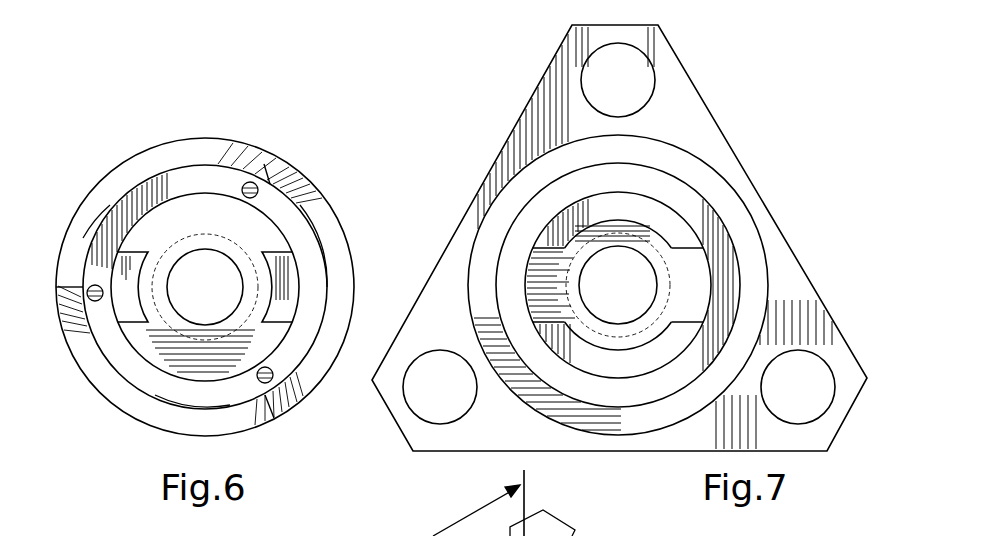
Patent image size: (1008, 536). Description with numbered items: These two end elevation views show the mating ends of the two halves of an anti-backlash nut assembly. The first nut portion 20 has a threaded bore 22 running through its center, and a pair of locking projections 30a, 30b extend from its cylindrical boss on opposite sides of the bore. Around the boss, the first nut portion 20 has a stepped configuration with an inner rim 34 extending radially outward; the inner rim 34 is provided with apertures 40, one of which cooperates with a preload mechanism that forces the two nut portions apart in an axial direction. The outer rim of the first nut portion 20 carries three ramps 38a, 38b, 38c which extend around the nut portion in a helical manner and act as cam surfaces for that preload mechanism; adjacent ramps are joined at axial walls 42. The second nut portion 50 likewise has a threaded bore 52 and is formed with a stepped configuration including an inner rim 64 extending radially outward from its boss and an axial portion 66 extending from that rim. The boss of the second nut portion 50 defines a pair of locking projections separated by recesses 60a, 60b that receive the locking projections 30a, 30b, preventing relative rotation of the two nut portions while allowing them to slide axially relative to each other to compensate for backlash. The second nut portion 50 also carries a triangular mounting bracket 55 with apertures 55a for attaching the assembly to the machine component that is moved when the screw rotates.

In FIG. 6, the first nut portion 20 is at (206, 125).
In FIG. 6, the threaded bore 22 is at (190, 301).
In FIG. 6, the locking projection 30a is at (128, 307).
In FIG. 6, the locking projection 30b is at (280, 300).
In FIG. 6, the inner rim 34 is at (168, 192).
In FIG. 6, the ramp 38a is at (157, 410).
In FIG. 6, the ramp 38b is at (328, 227).
In FIG. 6, the ramp 38c is at (115, 187).
In FIG. 6, the aperture 40 is at (255, 183).
In FIG. 6, the axial wall 42 is at (270, 158).
In FIG. 7, the second nut portion 50 is at (508, 99).
In FIG. 7, the threaded bore 52 is at (603, 299).
In FIG. 7, the mounting bracket 55 is at (677, 115).
In FIG. 7, the aperture 55a is at (627, 78).
In FIG. 7, the recess 60a is at (686, 292).
In FIG. 7, the recess 60b is at (545, 292).
In FIG. 7, the inner rim 64 is at (730, 250).
In FIG. 7, the axial portion 66 is at (733, 213).